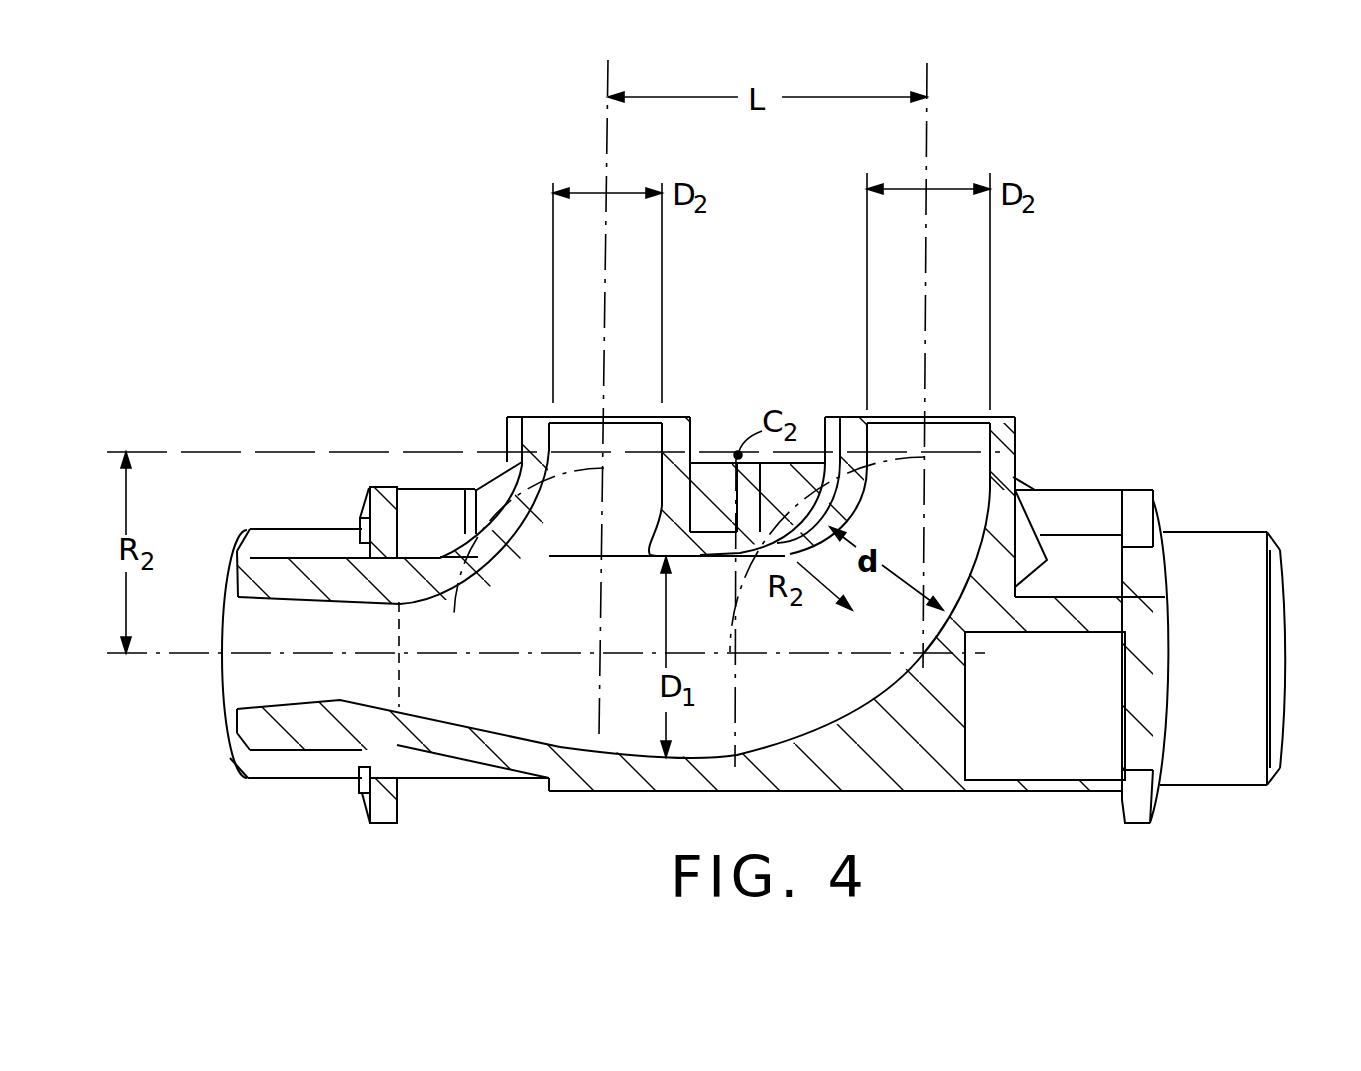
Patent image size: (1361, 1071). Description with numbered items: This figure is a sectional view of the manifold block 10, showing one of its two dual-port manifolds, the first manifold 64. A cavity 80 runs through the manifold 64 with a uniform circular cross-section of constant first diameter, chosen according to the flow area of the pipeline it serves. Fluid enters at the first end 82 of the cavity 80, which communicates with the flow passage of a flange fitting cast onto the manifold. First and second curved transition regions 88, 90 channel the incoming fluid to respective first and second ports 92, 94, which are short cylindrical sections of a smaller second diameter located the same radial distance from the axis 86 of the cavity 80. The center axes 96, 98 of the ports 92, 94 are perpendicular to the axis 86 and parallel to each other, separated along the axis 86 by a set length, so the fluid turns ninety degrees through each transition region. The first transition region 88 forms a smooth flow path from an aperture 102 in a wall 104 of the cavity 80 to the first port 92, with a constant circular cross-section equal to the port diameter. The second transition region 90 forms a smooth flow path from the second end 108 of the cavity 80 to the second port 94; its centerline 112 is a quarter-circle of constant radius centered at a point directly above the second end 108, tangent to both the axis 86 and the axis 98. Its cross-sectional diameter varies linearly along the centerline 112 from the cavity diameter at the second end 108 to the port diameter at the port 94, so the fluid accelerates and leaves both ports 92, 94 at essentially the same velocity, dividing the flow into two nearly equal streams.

The manifold block 10 is at (1272, 145).
The first dual-port manifold 64 is at (598, 775).
The cavity 80 is at (581, 704).
The first end of cavity 82 is at (400, 681).
The axis of cavity 86 is at (272, 653).
The first curved transition region 88 is at (655, 506).
The second curved transition region 90 is at (977, 506).
The first port 92 is at (652, 418).
The second port 94 is at (978, 418).
The center axis of first port 96 is at (607, 288).
The center axis of second port 98 is at (927, 267).
The aperture 102 is at (624, 575).
The wall of cavity 104 is at (716, 548).
The second end of cavity 108 is at (737, 680).
The centerline of second transition region 112 is at (848, 632).